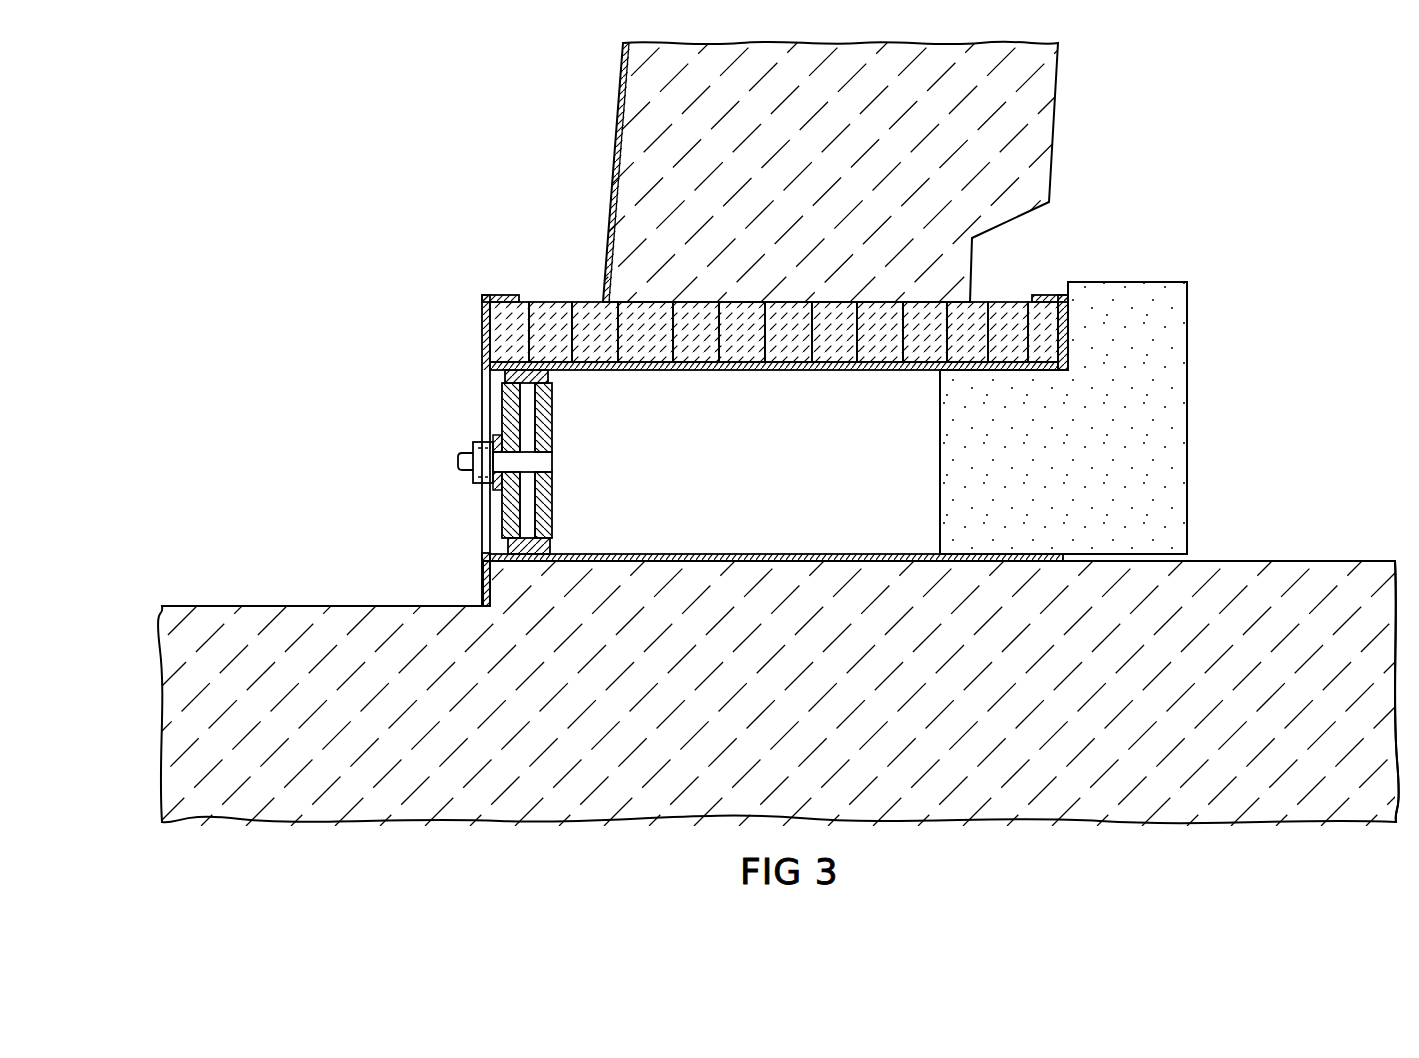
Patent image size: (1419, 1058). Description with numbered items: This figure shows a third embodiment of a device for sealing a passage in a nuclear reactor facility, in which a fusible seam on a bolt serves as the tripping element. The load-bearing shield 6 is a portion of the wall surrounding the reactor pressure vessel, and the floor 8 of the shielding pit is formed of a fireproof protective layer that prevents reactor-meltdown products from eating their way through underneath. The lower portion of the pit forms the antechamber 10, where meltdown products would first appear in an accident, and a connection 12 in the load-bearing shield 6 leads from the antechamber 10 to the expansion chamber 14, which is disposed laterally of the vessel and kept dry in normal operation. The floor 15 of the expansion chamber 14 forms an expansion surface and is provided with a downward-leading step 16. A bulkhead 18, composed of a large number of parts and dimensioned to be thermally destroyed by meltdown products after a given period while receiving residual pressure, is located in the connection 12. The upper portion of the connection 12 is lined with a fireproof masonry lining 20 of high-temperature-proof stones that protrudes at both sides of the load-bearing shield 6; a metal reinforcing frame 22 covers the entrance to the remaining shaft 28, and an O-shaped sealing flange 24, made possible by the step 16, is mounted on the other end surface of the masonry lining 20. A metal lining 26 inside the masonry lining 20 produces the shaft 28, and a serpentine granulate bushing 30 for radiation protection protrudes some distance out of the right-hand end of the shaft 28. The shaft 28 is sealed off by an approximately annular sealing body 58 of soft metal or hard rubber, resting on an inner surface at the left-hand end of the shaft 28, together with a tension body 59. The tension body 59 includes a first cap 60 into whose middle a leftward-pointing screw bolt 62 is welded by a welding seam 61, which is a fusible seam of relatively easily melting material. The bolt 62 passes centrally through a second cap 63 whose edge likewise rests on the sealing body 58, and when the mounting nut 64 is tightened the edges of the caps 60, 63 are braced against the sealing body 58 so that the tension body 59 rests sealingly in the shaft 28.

The load-bearing shield 6 is at (1008, 130).
The floor 8 is at (1335, 605).
The antechamber 10 is at (1352, 414).
The connection 12 is at (657, 302).
The expansion chamber 14 is at (310, 549).
The floor of the expansion chamber 15 is at (213, 605).
The step 16 is at (483, 594).
The bulkhead 18 is at (498, 298).
The masonry lining 20 is at (983, 310).
The reinforcing frame 22 is at (1070, 330).
The sealing flange 24 is at (484, 327).
The lining 26 is at (1040, 373).
The shaft 28 is at (757, 434).
The serpentine granulate bushing 30 is at (1160, 326).
The sealing body 58 is at (537, 367).
The tension body 59 is at (508, 521).
The first cap 60 is at (545, 507).
The welding seam 61 is at (552, 462).
The screw bolt 62 is at (460, 462).
The second cap 63 is at (500, 510).
The mounting nut 64 is at (478, 438).